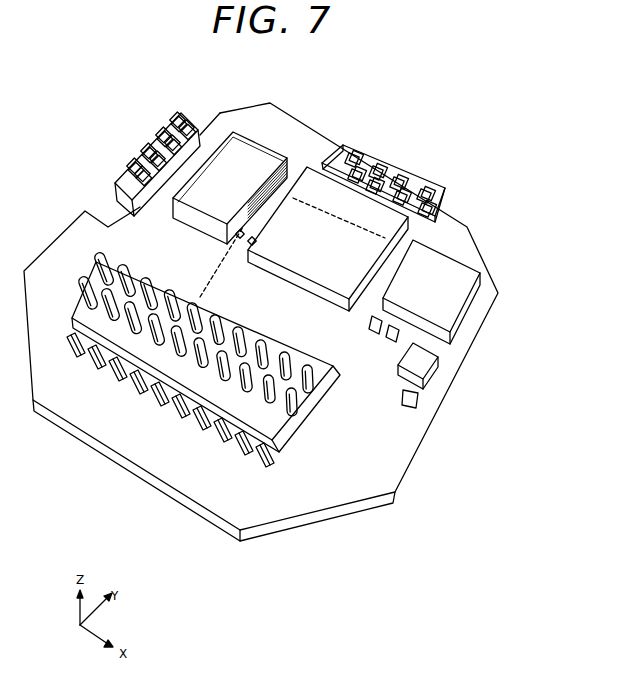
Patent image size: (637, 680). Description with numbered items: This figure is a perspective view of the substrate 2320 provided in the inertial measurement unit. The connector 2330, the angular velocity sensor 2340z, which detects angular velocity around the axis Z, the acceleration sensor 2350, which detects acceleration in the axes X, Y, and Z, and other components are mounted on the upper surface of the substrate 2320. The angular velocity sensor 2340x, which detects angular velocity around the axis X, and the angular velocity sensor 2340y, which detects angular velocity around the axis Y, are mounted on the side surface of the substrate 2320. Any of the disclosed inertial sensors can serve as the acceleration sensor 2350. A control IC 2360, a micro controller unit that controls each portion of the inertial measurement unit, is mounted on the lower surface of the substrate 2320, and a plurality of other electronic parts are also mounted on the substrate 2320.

The substrate 2320 is at (388, 466).
The connector 2330 is at (290, 427).
The angular velocity sensor 2340x is at (148, 144).
The angular velocity sensor 2340y is at (398, 158).
The angular velocity sensor 2340z is at (248, 142).
The acceleration sensor 2350 is at (402, 220).
The control IC 2360 is at (350, 412).